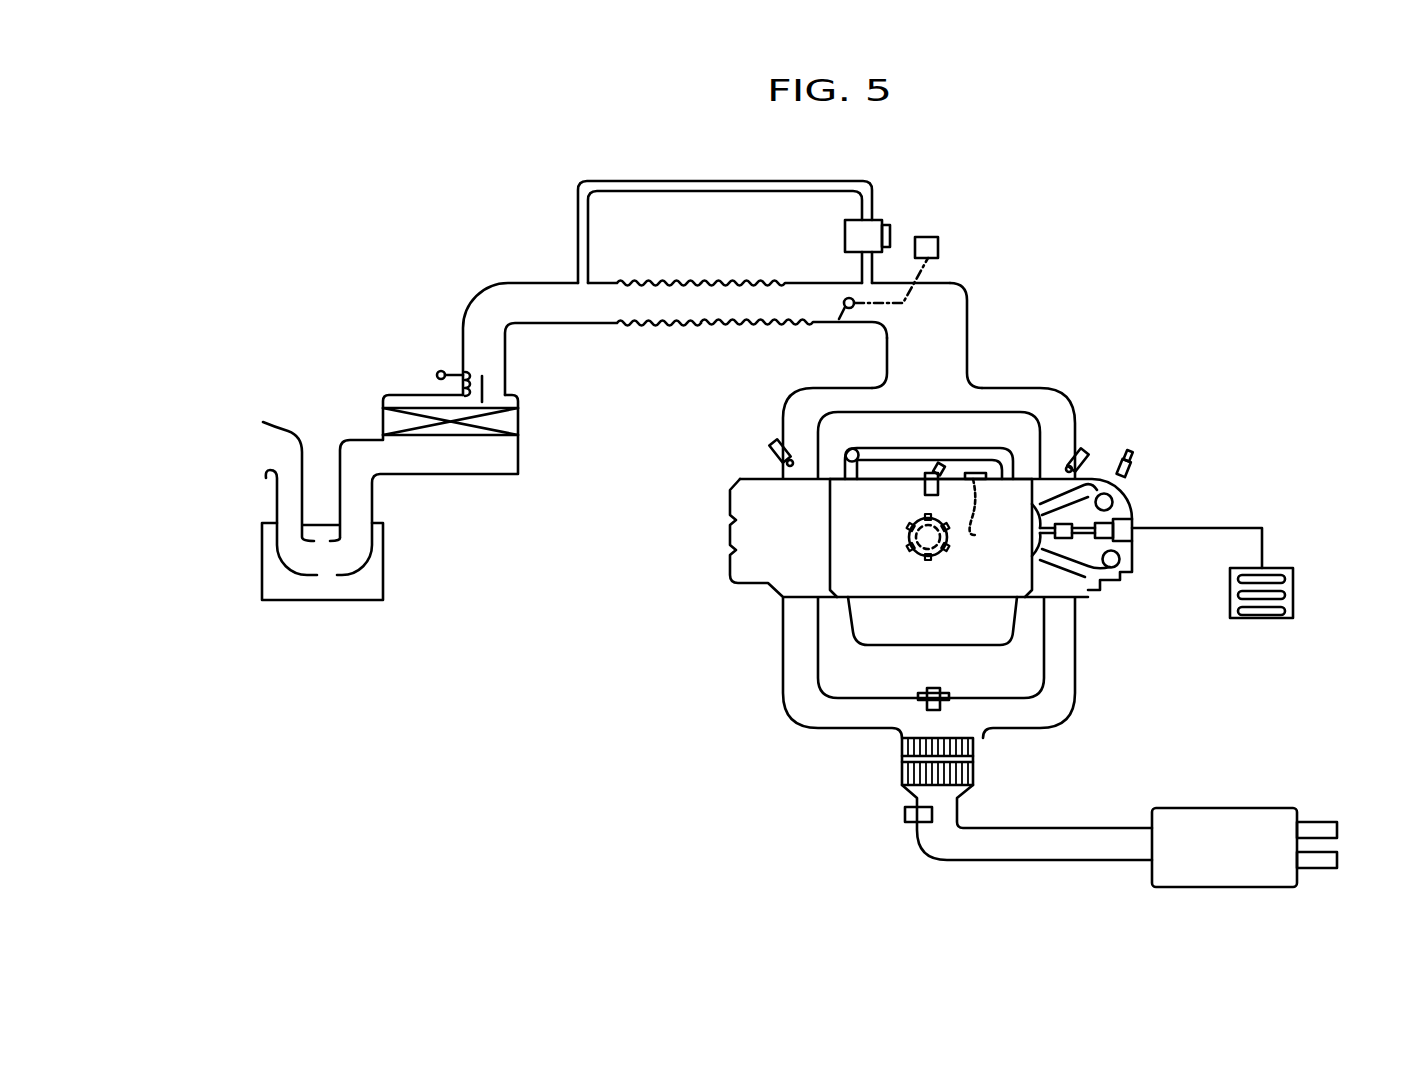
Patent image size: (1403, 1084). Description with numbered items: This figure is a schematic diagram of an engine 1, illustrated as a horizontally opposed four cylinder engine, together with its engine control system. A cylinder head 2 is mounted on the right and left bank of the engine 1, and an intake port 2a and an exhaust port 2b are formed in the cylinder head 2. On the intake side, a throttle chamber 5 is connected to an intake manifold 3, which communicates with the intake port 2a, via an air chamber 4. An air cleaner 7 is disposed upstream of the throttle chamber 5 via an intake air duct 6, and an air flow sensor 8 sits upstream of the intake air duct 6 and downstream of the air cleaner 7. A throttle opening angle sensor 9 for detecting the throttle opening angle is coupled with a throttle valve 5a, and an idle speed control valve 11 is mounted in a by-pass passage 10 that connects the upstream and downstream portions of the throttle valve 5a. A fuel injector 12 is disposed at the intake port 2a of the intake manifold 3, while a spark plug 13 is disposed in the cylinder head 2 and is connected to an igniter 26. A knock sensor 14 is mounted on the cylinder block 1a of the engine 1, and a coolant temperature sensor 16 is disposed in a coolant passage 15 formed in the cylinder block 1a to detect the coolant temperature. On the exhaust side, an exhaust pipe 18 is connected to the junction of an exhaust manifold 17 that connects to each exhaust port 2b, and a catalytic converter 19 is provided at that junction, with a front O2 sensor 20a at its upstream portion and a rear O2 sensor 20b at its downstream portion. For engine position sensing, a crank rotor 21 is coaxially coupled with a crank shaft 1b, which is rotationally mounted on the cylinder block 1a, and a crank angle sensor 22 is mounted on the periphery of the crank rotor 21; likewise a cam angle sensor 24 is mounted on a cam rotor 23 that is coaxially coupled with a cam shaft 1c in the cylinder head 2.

The engine 1 is at (733, 624).
The cylinder block 1a is at (888, 600).
The crank shaft 1b is at (918, 560).
The cam shaft 1c is at (1137, 500).
The cylinder head 2 is at (730, 567).
The intake port 2a is at (1032, 487).
The exhaust port 2b is at (1063, 570).
The intake manifold 3 is at (1043, 388).
The air chamber 4 is at (967, 307).
The throttle chamber 5 is at (812, 325).
The throttle valve 5a is at (845, 298).
The intake air duct 6 is at (600, 325).
The air cleaner 7 is at (518, 428).
The air flow sensor 8 is at (484, 388).
The throttle opening angle sensor 9 is at (938, 247).
The by-pass passage 10 is at (705, 190).
The idle speed control valve 11 is at (882, 218).
The fuel injector 12 is at (770, 455).
The spark plug 13 is at (1133, 524).
The knock sensor 14 is at (980, 522).
The coolant passage 15 is at (942, 446).
The coolant temperature sensor 16 is at (857, 449).
The exhaust manifold 17 is at (1077, 695).
The exhaust pipe 18 is at (993, 862).
The catalytic converter 19 is at (975, 772).
The front O2 sensor 20a is at (945, 688).
The rear O2 sensor 20b is at (905, 815).
The crank rotor 21 is at (908, 545).
The crank angle sensor 22 is at (925, 490).
The cam rotor 23 is at (1137, 508).
The cam angle sensor 24 is at (1131, 462).
The igniter 26 is at (1293, 600).